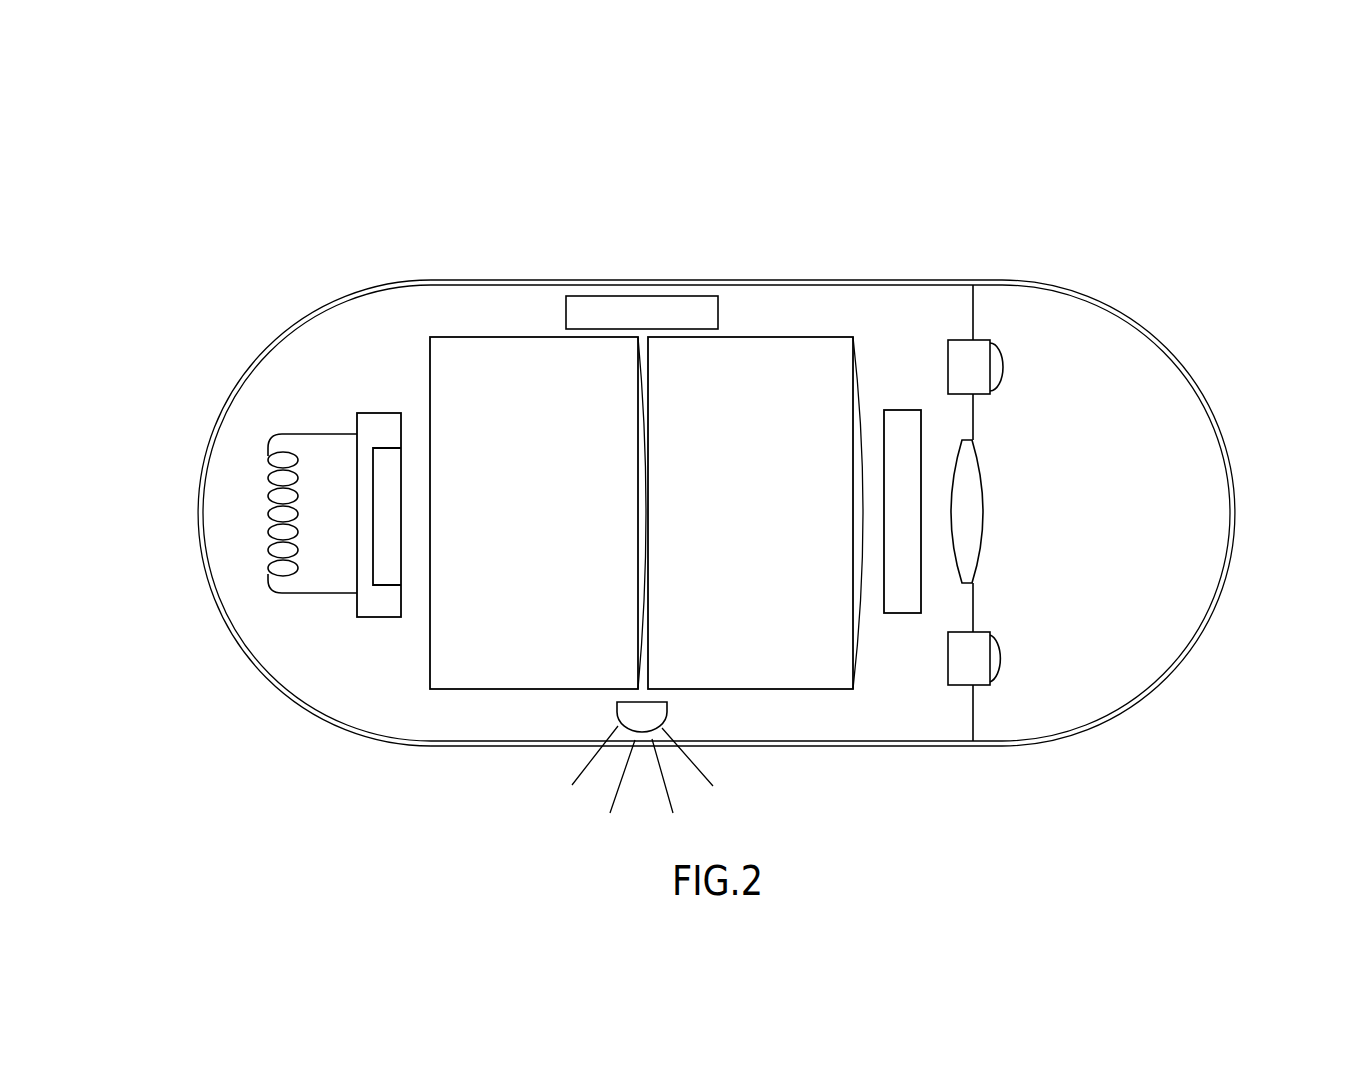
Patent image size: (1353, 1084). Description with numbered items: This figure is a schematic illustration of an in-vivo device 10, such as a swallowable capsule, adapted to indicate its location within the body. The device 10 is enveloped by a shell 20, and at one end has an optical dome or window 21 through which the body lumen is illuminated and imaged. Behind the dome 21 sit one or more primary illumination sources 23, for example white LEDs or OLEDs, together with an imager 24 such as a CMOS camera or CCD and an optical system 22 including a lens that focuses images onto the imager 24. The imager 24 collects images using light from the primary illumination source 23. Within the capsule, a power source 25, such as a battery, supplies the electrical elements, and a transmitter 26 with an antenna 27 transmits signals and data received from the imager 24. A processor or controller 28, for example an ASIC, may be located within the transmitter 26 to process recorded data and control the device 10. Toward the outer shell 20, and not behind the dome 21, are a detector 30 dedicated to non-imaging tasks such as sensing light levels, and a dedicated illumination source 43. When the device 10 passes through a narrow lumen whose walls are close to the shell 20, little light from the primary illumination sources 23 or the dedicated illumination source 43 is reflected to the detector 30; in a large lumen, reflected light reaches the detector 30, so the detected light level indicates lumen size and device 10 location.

The in-vivo device 10 is at (985, 149).
The shell 20 is at (797, 283).
The optical dome or window 21 is at (1212, 406).
The optical system 22 is at (983, 518).
The primary illumination source 23 is at (1004, 366).
The imager 24 is at (903, 613).
The power source 25 is at (551, 515).
The transmitter 26 is at (380, 424).
The antenna 27 is at (270, 505).
The processor and/or controller 28 is at (390, 588).
The detector 30 is at (624, 295).
The dedicated illumination source 43 is at (668, 712).